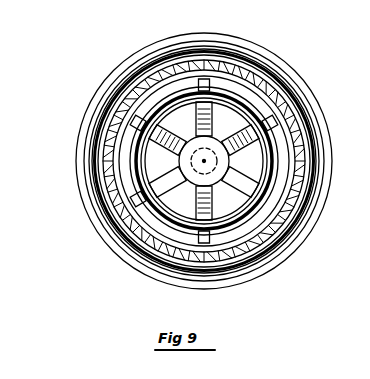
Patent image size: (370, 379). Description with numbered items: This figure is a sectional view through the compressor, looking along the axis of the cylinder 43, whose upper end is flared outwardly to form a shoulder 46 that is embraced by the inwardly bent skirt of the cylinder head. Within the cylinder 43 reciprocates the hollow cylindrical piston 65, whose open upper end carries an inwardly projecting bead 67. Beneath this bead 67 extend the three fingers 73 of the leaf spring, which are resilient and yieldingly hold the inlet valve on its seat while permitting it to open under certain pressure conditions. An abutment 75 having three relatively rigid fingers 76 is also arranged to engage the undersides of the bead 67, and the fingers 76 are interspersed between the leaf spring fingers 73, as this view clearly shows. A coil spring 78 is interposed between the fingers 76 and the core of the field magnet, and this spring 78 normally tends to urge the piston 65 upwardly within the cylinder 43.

The cylinder 43 is at (150, 82).
The shoulder 46 is at (265, 72).
The piston 65 is at (150, 236).
The bead 67 is at (276, 147).
The fingers of the leaf spring 73 is at (275, 121).
The abutment 75 is at (183, 157).
The fingers of the abutment 76 is at (204, 79).
The coil spring 78 is at (287, 233).